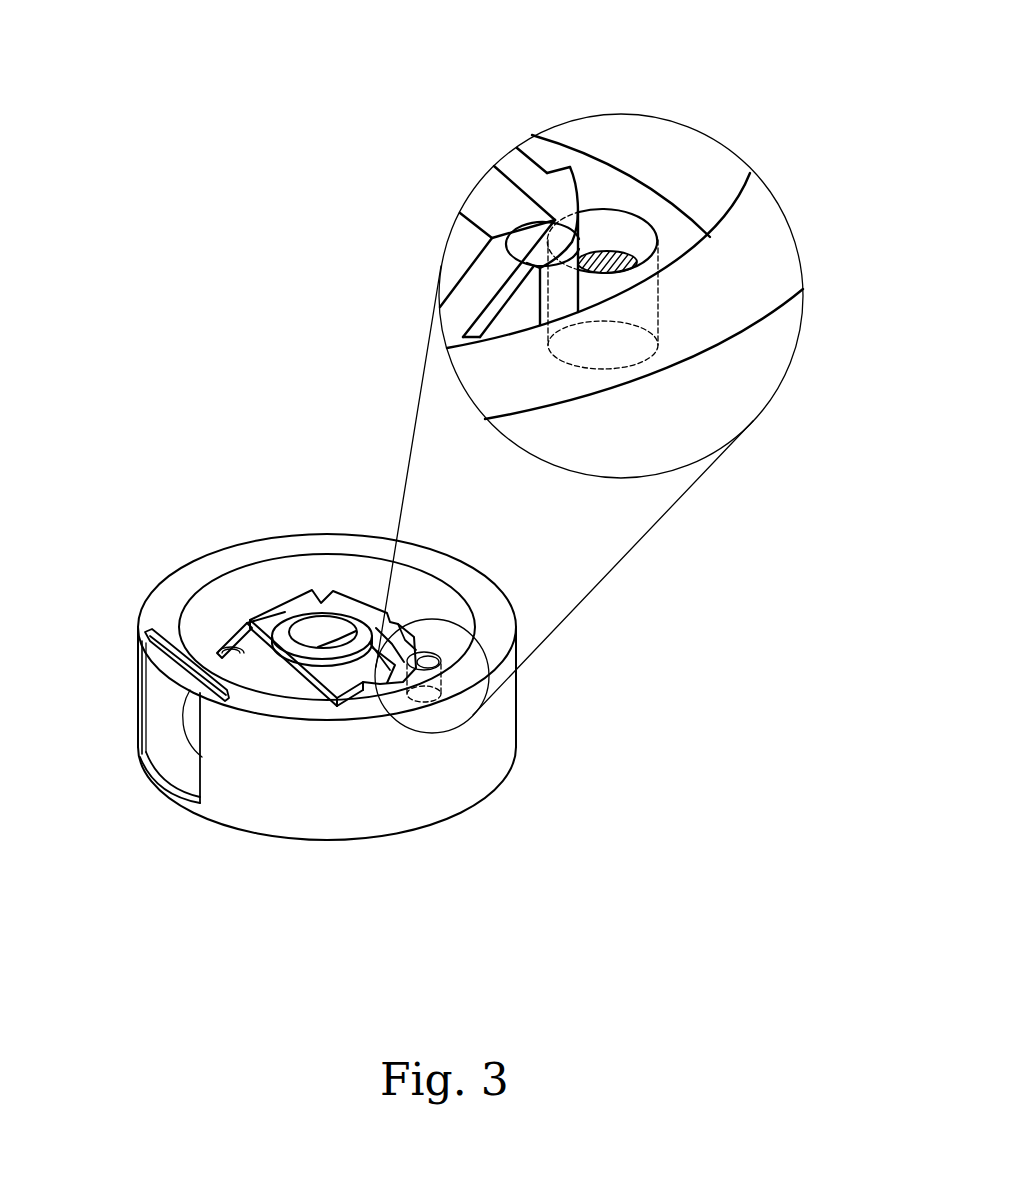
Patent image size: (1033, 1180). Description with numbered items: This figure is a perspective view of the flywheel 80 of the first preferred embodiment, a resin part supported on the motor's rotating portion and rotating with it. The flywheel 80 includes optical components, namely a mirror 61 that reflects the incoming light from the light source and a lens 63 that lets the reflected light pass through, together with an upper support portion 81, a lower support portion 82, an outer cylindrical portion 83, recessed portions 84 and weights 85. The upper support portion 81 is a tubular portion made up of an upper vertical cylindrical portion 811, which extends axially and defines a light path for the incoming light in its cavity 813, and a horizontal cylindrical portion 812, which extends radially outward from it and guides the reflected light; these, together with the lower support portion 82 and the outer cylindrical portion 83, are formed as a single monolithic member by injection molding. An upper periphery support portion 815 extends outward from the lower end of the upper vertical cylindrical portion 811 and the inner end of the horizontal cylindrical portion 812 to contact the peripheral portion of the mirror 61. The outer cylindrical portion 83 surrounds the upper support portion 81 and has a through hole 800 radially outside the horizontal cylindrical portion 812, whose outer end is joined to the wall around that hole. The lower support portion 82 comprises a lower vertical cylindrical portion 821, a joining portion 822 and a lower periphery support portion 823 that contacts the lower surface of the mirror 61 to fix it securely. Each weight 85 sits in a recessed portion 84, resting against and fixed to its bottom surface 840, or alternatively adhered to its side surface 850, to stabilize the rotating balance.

The flywheel 80 is at (548, 738).
The through hole 800 is at (177, 762).
The lens 63 is at (160, 702).
The outer cylindrical portion 83 is at (153, 612).
The upper support portion 81 is at (278, 562).
The upper vertical cylindrical portion 811 is at (292, 610).
The horizontal cylindrical portion 812 is at (251, 670).
The cavity 813 is at (336, 620).
The lower support portion 82 is at (356, 518).
The lower vertical cylindrical portion 821 is at (378, 618).
The joining portion 822 is at (418, 668).
The lower periphery support portion 823 is at (517, 318).
The upper periphery support portion 815 is at (483, 195).
The mirror 61 is at (473, 333).
The recessed portion 84 is at (598, 240).
The weight 85 is at (615, 250).
The bottom surface 840 is at (608, 352).
The side surface 850 is at (663, 310).